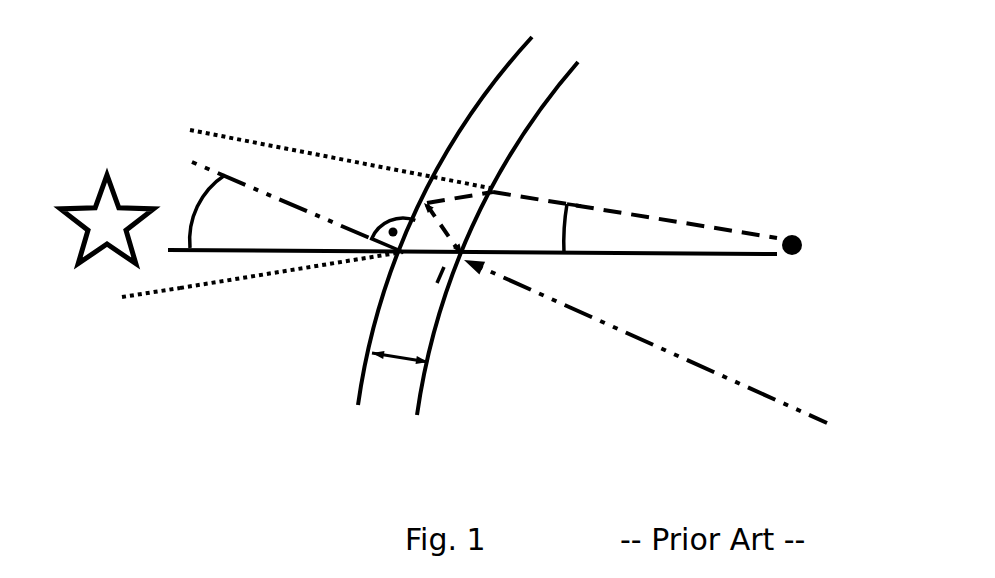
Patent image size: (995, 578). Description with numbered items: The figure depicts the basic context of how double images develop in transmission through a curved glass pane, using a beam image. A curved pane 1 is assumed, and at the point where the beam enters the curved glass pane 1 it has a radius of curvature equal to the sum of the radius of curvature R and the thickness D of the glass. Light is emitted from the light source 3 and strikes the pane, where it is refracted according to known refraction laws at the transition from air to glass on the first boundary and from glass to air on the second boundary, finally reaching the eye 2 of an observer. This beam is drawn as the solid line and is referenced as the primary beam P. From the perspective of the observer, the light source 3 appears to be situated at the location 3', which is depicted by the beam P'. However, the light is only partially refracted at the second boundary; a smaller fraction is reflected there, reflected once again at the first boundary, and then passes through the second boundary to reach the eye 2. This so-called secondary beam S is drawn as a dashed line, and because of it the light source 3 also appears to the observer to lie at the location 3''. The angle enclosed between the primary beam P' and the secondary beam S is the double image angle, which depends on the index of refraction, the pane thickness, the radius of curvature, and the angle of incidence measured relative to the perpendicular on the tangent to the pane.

The curved pane 1 is at (362, 373).
The eye 2 is at (796, 226).
The light source 3 is at (106, 219).
The location 3' is at (112, 339).
The location 3'' is at (339, 102).
The primary beam P is at (472, 302).
The beam P' is at (291, 323).
The secondary beam S is at (682, 214).
The radius of curvature R is at (646, 355).
The thickness D is at (398, 383).